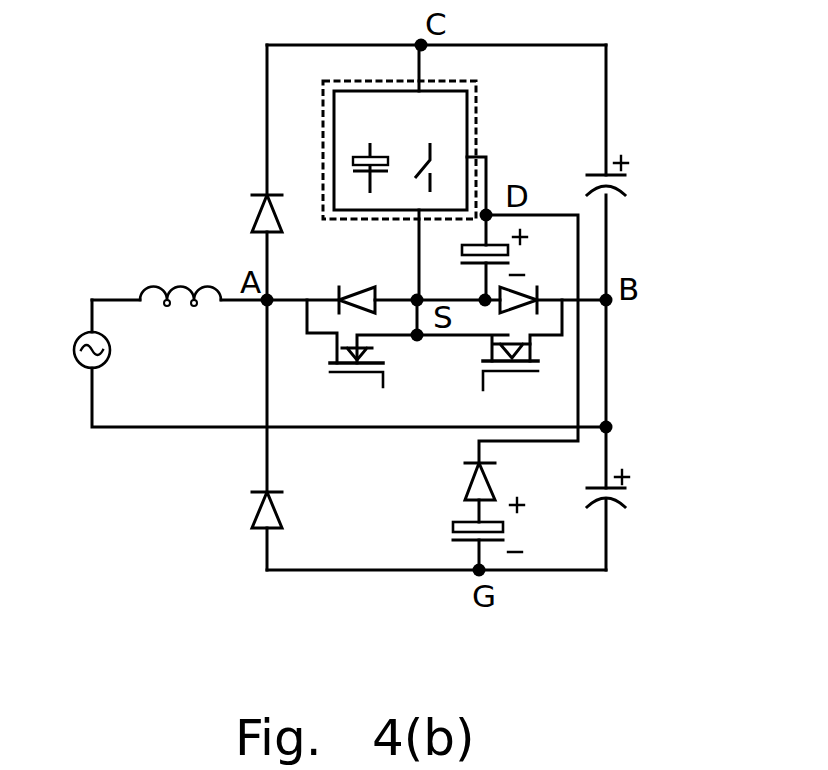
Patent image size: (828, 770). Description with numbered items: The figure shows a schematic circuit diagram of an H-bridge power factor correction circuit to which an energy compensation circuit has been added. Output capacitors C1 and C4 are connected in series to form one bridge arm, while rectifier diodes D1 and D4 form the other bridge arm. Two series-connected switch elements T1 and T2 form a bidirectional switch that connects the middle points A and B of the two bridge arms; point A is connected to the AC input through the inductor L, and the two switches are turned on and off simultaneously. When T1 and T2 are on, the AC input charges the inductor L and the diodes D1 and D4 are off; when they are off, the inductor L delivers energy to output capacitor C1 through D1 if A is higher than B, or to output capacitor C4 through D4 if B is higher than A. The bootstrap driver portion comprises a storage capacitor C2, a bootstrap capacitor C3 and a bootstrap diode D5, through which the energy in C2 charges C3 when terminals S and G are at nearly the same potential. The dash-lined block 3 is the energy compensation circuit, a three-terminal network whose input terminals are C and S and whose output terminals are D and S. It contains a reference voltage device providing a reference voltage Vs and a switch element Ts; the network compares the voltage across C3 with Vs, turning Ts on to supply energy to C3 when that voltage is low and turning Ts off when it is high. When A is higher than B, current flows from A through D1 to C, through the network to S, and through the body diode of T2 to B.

The dash-lined block 3 is at (418, 114).
The inductor L is at (180, 278).
The rectifier diode D1 is at (289, 195).
The rectifier diode D4 is at (290, 493).
The bootstrap diode D5 is at (515, 475).
The switch element T1 is at (362, 362).
The switch element T2 is at (489, 359).
The output capacitor C1 is at (632, 168).
The storage capacitor C2 is at (515, 534).
The bootstrap capacitor C3 is at (517, 255).
The output capacitor C4 is at (632, 480).
The reference voltage Vs is at (371, 148).
The switch element Ts is at (427, 147).